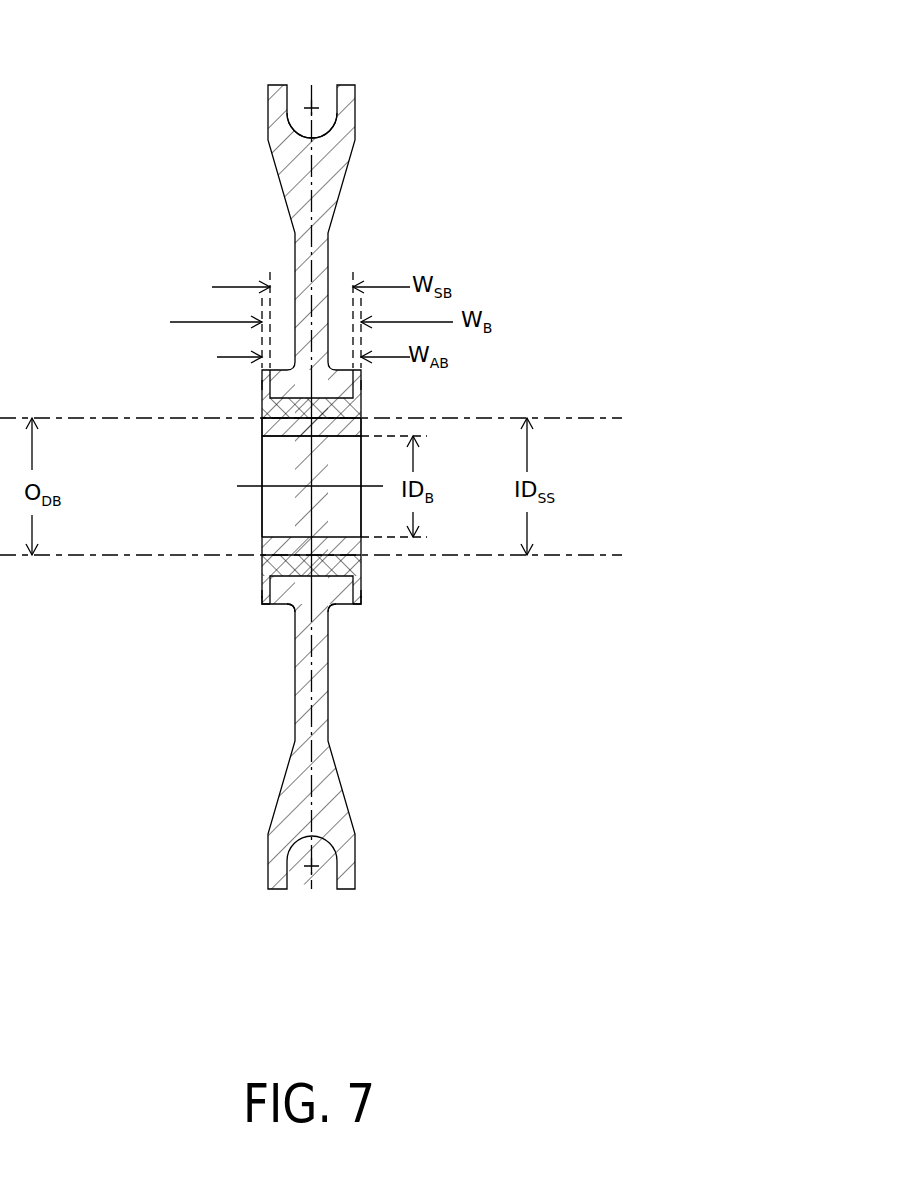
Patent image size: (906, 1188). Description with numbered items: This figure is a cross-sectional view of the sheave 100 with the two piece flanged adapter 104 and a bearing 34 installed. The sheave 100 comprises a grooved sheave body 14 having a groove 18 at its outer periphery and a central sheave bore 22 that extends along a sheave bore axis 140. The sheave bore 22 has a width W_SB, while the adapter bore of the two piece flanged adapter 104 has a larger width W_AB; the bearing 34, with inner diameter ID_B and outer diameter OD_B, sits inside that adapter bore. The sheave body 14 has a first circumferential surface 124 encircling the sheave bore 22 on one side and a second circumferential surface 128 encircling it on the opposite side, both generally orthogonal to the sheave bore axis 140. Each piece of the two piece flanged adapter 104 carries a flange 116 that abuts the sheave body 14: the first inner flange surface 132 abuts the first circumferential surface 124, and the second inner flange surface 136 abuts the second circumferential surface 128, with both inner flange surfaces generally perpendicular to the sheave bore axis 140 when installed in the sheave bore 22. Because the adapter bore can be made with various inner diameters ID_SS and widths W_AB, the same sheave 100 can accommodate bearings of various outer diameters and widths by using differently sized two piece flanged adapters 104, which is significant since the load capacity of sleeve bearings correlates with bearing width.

The sheave body 14 is at (343, 172).
The groove 18 is at (291, 97).
The sheave bore 22 is at (262, 565).
The bearing 34 is at (261, 430).
The sheave 100 is at (516, 96).
The two piece flanged adapter 104 is at (362, 565).
The flange 116 is at (262, 384).
The first circumferential surface 124 is at (268, 606).
The second circumferential surface 128 is at (355, 606).
The first inner flange surface 132 is at (262, 606).
The second inner flange surface 136 is at (362, 606).
The sheave bore axis 140 is at (292, 487).